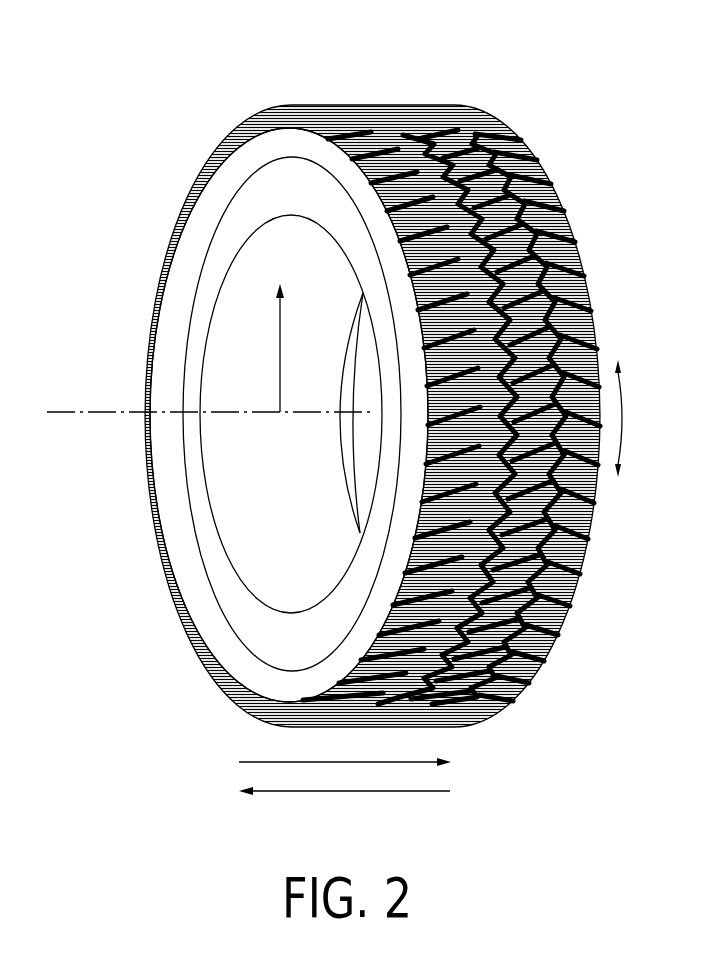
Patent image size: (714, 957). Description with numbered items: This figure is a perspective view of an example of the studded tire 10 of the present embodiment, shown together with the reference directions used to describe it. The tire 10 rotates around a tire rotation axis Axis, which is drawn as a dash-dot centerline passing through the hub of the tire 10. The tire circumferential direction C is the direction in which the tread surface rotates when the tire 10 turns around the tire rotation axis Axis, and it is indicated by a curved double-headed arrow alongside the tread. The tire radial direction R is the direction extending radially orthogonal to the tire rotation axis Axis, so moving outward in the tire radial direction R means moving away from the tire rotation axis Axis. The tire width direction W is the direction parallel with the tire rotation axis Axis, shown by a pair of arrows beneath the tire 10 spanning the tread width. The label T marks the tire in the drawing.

The tire T is at (372, 88).
The studded tire 10 is at (533, 88).
The tire radial direction R is at (288, 348).
The tire circumferential direction C is at (629, 418).
The tire width direction W is at (345, 790).
The tire rotation axis Axis is at (65, 415).